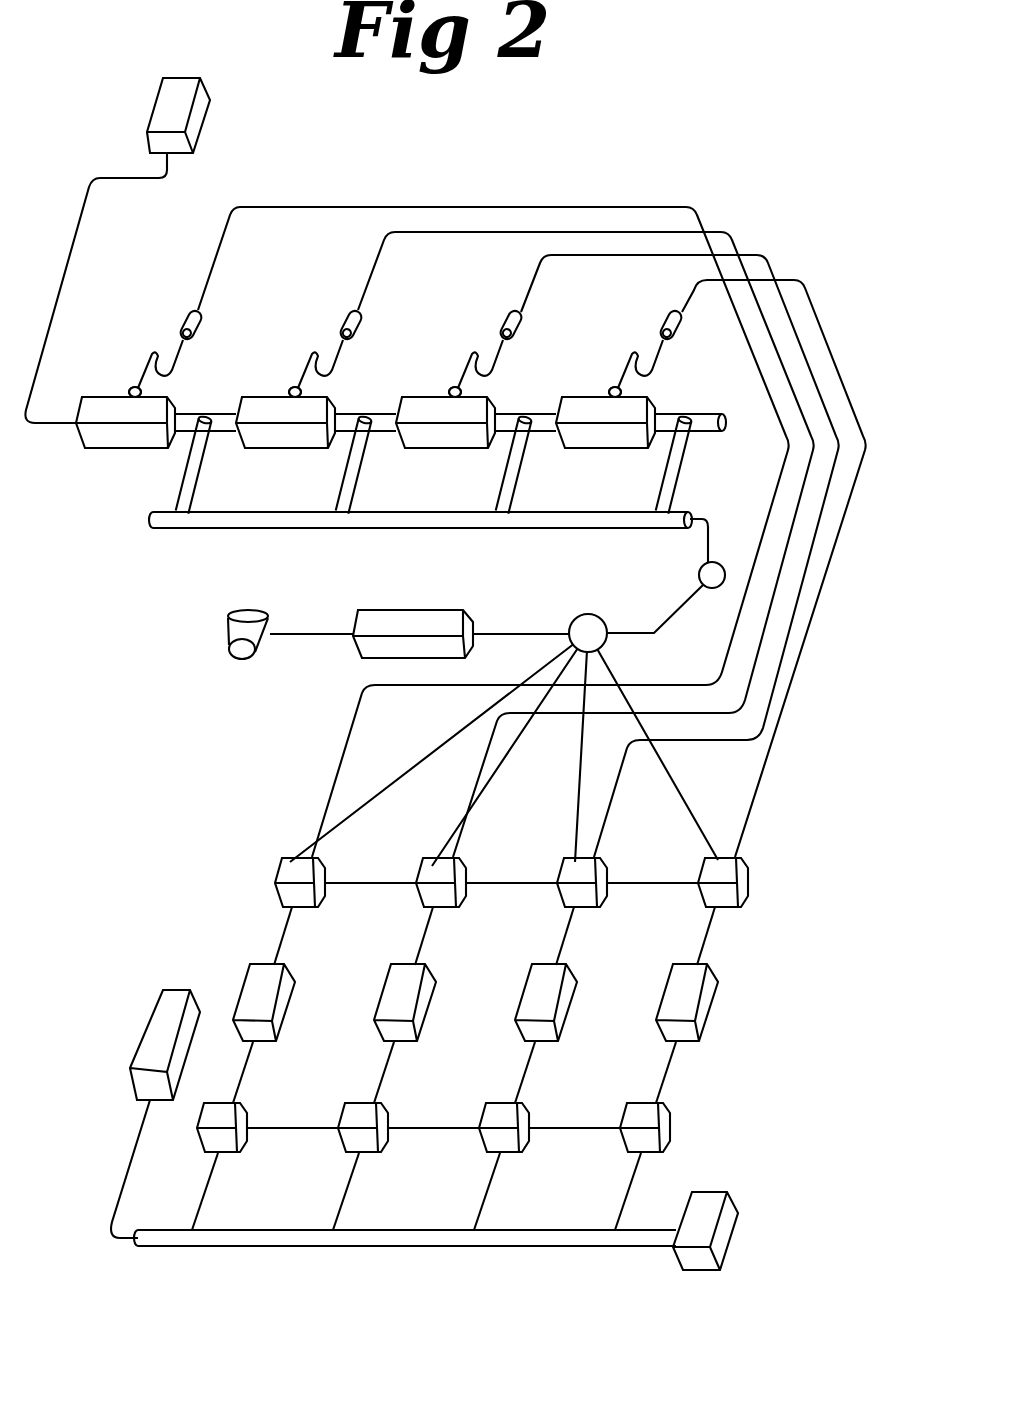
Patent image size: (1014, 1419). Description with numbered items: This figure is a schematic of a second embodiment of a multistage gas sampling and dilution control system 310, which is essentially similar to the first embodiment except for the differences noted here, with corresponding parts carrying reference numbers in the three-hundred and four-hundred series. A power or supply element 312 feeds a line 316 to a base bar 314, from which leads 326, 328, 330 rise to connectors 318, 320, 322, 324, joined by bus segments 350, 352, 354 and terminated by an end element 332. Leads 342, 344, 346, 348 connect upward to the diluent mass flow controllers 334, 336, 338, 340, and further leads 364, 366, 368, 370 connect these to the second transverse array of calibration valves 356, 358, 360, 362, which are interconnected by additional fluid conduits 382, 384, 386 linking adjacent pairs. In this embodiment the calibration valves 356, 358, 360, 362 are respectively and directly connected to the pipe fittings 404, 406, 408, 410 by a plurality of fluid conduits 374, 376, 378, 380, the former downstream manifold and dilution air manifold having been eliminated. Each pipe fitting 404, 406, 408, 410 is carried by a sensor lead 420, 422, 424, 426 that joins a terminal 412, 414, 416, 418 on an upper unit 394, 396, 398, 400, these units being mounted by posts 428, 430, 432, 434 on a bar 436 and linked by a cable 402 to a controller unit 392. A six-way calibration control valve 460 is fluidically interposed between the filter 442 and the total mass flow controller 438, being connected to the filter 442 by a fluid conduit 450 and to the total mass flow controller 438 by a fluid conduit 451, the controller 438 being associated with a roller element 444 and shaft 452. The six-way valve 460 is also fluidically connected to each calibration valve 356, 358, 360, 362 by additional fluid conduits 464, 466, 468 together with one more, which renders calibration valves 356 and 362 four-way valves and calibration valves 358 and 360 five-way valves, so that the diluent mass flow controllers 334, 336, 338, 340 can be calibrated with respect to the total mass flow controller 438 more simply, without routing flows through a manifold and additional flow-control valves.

The multistage gas sampling and dilution control system 310 is at (724, 172).
The power supply 312 is at (170, 1012).
The return bus 314 is at (378, 1246).
The power lead 316 is at (126, 1168).
The connector 318 is at (248, 1140).
The connector 320 is at (389, 1140).
The connector 322 is at (530, 1140).
The connector 324 is at (672, 1136).
The lead 326 is at (203, 1206).
The lead 328 is at (344, 1206).
The lead 330 is at (485, 1206).
The terminator 332 is at (637, 1200).
The diluent mass flow controller 334 is at (287, 997).
The diluent mass flow controller 336 is at (428, 997).
The diluent mass flow controller 338 is at (569, 997).
The diluent mass flow controller 340 is at (710, 997).
The lead 342 is at (240, 1084).
The lead 344 is at (381, 1084).
The lead 346 is at (522, 1084).
The lead 348 is at (663, 1084).
The bus segment 350 is at (269, 1128).
The bus segment 352 is at (410, 1128).
The bus segment 354 is at (551, 1128).
The calibration valve 356 is at (325, 893).
The calibration valve 358 is at (466, 893).
The calibration valve 360 is at (607, 893).
The calibration valve 362 is at (748, 893).
The lead 364 is at (283, 935).
The lead 366 is at (424, 935).
The lead 368 is at (565, 935).
The lead 370 is at (706, 935).
The fluid conduit 374 is at (318, 842).
The fluid conduit 376 is at (459, 842).
The fluid conduit 378 is at (600, 842).
The fluid conduit 380 is at (741, 842).
The additional fluid conduit 382 is at (347, 883).
The additional fluid conduit 384 is at (488, 883).
The additional fluid conduit 386 is at (629, 883).
The controller 392 is at (200, 123).
The actuator 394 is at (123, 440).
The actuator 396 is at (283, 440).
The actuator 398 is at (443, 440).
The actuator 400 is at (603, 440).
The control cable 402 is at (84, 232).
The pipe fitting 404 is at (185, 317).
The pipe fitting 406 is at (345, 317).
The pipe fitting 408 is at (505, 317).
The pipe fitting 410 is at (665, 317).
The terminal 412 is at (131, 392).
The terminal 414 is at (291, 392).
The terminal 416 is at (451, 392).
The terminal 418 is at (611, 392).
The sensor lead 420 is at (157, 357).
The sensor lead 422 is at (317, 357).
The sensor lead 424 is at (477, 357).
The sensor lead 426 is at (637, 357).
The support post 428 is at (180, 468).
The support post 430 is at (340, 468).
The support post 432 is at (500, 468).
The support post 434 is at (660, 468).
The mounting bar 436 is at (163, 522).
The total mass flow controller 438 is at (407, 610).
The filter 442 is at (700, 569).
The roller 444 is at (244, 610).
The fluid conduit 450 is at (674, 611).
The fluid conduit 451 is at (503, 634).
The shaft 452 is at (308, 636).
The six-way calibration control valve 460 is at (580, 615).
The additional fluid conduit 464 is at (470, 806).
The additional fluid conduit 466 is at (576, 802).
The additional fluid conduit 468 is at (756, 801).